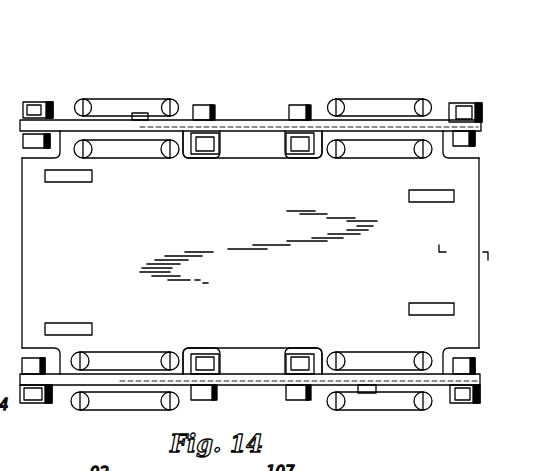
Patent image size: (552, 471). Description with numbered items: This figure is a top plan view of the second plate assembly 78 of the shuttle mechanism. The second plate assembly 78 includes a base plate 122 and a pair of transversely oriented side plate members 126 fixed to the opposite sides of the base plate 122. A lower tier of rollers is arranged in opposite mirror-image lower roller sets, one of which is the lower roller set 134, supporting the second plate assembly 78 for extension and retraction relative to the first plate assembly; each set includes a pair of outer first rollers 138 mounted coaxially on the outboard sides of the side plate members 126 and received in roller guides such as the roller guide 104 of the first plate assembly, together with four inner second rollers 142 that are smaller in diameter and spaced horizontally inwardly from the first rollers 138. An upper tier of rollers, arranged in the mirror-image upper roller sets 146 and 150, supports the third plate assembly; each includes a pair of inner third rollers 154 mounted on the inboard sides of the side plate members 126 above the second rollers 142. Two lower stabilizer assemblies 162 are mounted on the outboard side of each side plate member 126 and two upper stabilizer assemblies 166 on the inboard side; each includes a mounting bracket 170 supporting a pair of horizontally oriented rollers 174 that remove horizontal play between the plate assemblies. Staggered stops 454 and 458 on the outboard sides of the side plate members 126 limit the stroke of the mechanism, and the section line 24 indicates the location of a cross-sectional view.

The section line 24 is at (441, 66).
The second plate assembly 78 is at (227, 52).
The roller guide 104 is at (13, 56).
The base plate 122 is at (236, 232).
The side plate member 126 is at (262, 133).
The lower roller set 134 is at (348, 412).
The first roller 138 is at (36, 102).
The second roller 142 is at (203, 105).
The upper roller set 146 is at (124, 64).
The upper roller set 150 is at (358, 72).
The third roller 154 is at (210, 158).
The lower stabilizer assembly 162 is at (156, 98).
The upper stabilizer assembly 166 is at (131, 162).
The mounting bracket 170 is at (392, 118).
The roller 174 is at (83, 99).
The stop 454 is at (367, 393).
The stop 458 is at (141, 113).